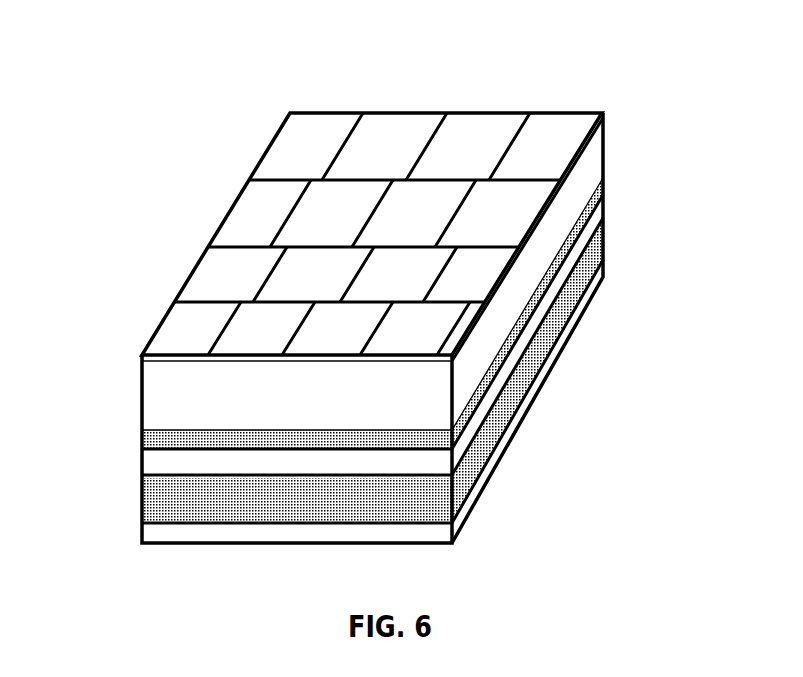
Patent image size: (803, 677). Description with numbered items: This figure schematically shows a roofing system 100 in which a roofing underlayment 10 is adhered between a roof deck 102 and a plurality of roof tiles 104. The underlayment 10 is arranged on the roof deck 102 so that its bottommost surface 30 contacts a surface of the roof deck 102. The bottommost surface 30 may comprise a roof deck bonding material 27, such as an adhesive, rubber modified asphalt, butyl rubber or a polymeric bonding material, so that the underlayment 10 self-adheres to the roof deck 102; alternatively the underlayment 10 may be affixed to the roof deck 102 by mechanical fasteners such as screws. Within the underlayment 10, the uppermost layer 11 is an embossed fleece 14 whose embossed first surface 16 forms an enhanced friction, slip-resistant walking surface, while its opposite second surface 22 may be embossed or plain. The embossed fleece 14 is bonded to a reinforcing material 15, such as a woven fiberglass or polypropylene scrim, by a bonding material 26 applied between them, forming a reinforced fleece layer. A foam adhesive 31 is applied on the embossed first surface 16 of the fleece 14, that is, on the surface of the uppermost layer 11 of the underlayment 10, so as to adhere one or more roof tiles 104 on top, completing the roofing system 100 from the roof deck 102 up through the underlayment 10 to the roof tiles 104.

The roofing system 100 is at (262, 92).
The roof tiles 104 is at (213, 275).
The roof deck 102 is at (541, 373).
The underlayment 10 is at (610, 125).
The foam adhesive 31 is at (138, 355).
The first surface 16 is at (158, 361).
The uppermost layer 11 is at (185, 360).
The embossed fleece 14 is at (306, 405).
The second surface 22 is at (172, 430).
The bonding material 26 is at (158, 442).
The reinforcing material 15 is at (306, 473).
The roof deck bonding material 27 is at (306, 511).
The bottommost surface 30 is at (411, 529).